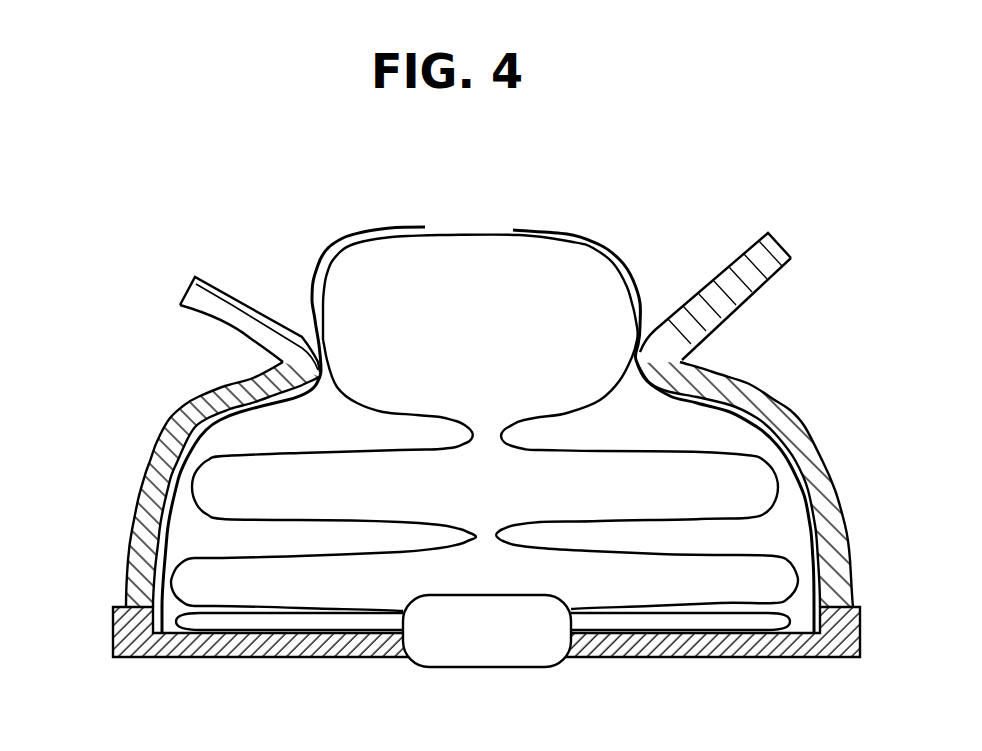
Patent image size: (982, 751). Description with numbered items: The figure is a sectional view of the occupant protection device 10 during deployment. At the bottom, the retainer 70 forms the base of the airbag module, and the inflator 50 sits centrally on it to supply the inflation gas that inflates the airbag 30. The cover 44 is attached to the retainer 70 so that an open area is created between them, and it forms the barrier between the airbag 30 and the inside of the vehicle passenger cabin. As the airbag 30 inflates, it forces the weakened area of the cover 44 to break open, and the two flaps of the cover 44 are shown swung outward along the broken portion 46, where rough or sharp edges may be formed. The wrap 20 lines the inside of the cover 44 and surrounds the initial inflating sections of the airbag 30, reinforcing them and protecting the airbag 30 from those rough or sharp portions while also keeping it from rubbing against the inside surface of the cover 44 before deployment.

The occupant protection device 10 is at (95, 238).
The wrap 20 is at (609, 243).
The airbag 30 is at (765, 603).
The cover 44 is at (782, 407).
The broken portion 46 is at (180, 303).
The inflator 50 is at (490, 635).
The retainer 70 is at (315, 643).